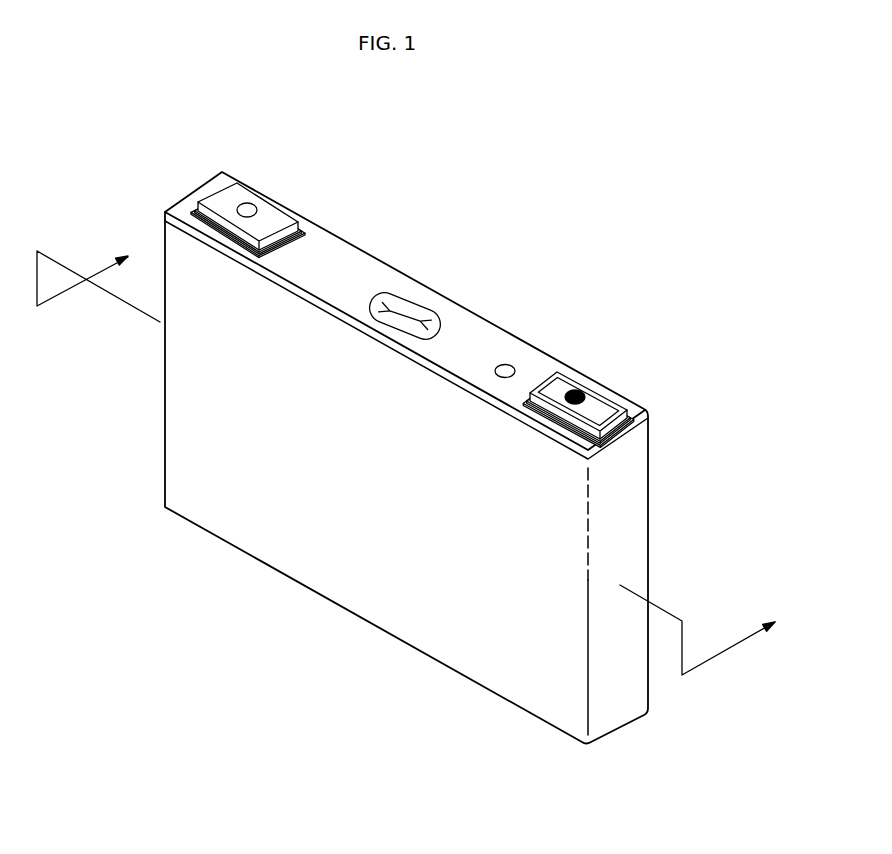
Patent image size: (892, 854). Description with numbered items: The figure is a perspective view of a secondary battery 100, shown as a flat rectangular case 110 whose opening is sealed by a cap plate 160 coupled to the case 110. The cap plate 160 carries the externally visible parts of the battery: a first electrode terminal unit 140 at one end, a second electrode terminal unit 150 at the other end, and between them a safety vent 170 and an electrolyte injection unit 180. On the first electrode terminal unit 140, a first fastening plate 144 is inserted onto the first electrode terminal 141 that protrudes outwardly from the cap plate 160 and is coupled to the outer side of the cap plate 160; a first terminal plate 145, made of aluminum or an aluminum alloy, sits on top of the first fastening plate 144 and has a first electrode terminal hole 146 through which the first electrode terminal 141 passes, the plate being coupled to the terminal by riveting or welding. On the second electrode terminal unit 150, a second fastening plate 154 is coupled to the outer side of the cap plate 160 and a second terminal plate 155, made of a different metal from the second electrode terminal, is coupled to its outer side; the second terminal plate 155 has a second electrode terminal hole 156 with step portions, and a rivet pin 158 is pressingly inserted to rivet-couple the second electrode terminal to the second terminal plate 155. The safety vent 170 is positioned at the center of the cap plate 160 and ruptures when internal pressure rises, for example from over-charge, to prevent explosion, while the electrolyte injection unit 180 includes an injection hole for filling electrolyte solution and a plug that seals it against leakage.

The secondary battery 100 is at (784, 122).
The case 110 is at (636, 505).
The first electrode terminal unit 140 is at (272, 186).
The first electrode terminal 141 is at (247, 203).
The first fastening plate 144 is at (305, 226).
The first terminal plate 145 is at (280, 217).
The first electrode terminal hole 146 is at (230, 206).
The second electrode terminal unit 150 is at (622, 375).
The second fastening plate 154 is at (637, 420).
The second terminal plate 155 is at (624, 411).
The second electrode terminal hole 156 is at (611, 394).
The rivet pin 158 is at (573, 390).
The cap plate 160 is at (366, 265).
The safety vent 170 is at (420, 299).
The electrolyte injection unit 180 is at (505, 362).